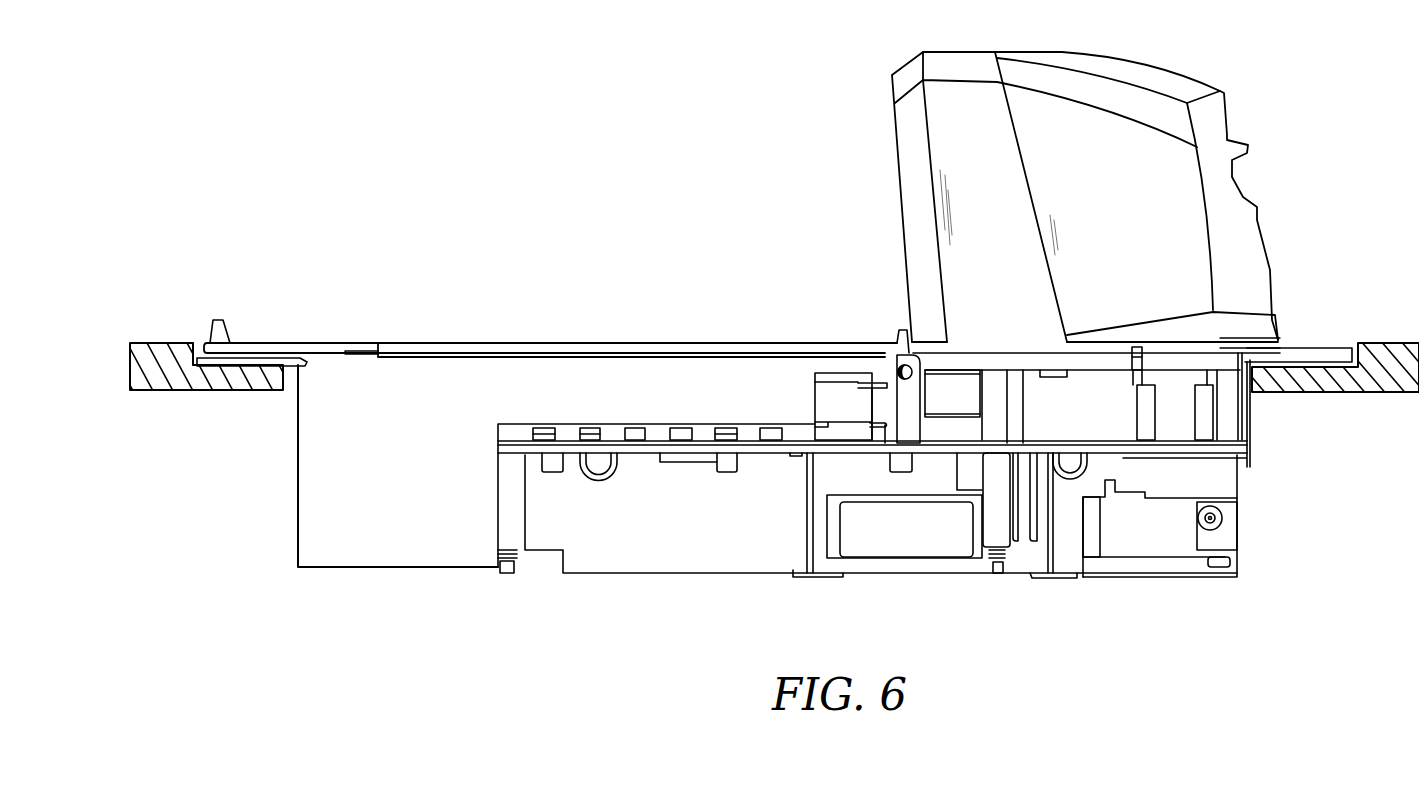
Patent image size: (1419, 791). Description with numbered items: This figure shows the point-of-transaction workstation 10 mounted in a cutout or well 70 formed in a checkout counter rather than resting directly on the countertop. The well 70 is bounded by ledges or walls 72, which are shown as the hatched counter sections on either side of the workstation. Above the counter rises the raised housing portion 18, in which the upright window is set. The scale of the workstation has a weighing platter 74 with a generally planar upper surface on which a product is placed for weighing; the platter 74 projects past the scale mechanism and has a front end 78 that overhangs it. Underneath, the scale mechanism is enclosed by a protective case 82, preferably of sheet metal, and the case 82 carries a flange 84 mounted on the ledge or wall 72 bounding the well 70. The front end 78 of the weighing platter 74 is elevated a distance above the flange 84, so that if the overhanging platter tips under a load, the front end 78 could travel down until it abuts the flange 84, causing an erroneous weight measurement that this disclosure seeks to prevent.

The point-of-transaction workstation 10 is at (738, 318).
The raised housing portion 18 is at (1077, 58).
The well 70 is at (192, 342).
The ledge or wall 72 is at (252, 380).
The weighing platter 74 is at (423, 347).
The front end 78 is at (287, 347).
The protective case 82 is at (370, 548).
The flange 84 is at (240, 363).